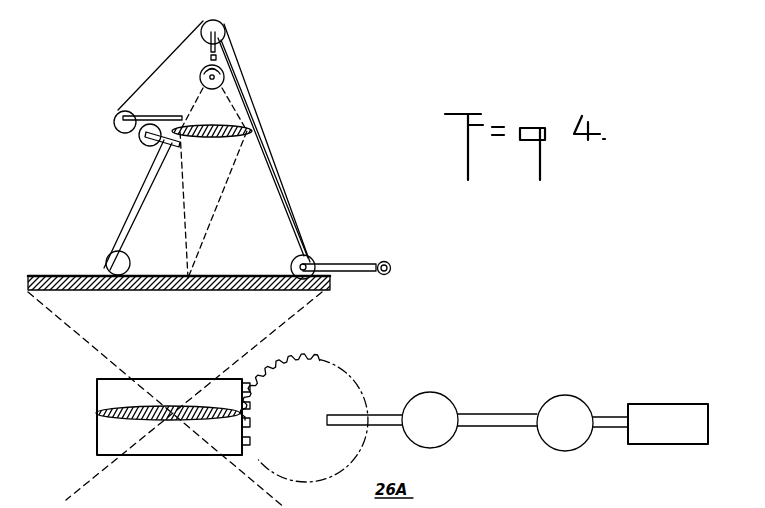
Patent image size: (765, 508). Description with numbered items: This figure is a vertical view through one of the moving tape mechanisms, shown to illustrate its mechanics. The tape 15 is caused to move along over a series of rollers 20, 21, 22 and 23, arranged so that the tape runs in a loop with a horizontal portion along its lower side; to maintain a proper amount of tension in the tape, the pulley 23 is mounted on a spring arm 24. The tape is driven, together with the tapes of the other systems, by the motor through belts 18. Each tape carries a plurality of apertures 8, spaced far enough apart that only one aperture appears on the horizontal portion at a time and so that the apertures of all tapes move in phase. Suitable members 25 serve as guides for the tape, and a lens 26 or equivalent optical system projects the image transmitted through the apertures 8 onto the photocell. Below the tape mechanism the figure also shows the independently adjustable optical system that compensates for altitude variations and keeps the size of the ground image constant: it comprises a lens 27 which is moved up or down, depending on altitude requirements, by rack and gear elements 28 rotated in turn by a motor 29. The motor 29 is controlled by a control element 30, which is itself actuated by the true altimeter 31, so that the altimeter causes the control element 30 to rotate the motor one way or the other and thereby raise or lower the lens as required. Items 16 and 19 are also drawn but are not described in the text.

The apertures 8 is at (180, 45).
The tape 15 is at (258, 100).
The plate 16 is at (168, 291).
The belt 18 is at (355, 263).
The ring 19 is at (392, 263).
The roller 20 is at (123, 256).
The roller 21 is at (138, 140).
The roller 22 is at (226, 30).
The pulley 23 is at (118, 110).
The spring arm 24 is at (155, 115).
The guide members 25 is at (125, 212).
The lens 26 is at (208, 146).
The lens 27 is at (112, 418).
The rack and gear elements 28 is at (273, 362).
The motor 29 is at (452, 400).
The control element 30 is at (578, 400).
The true altimeter 31 is at (672, 404).